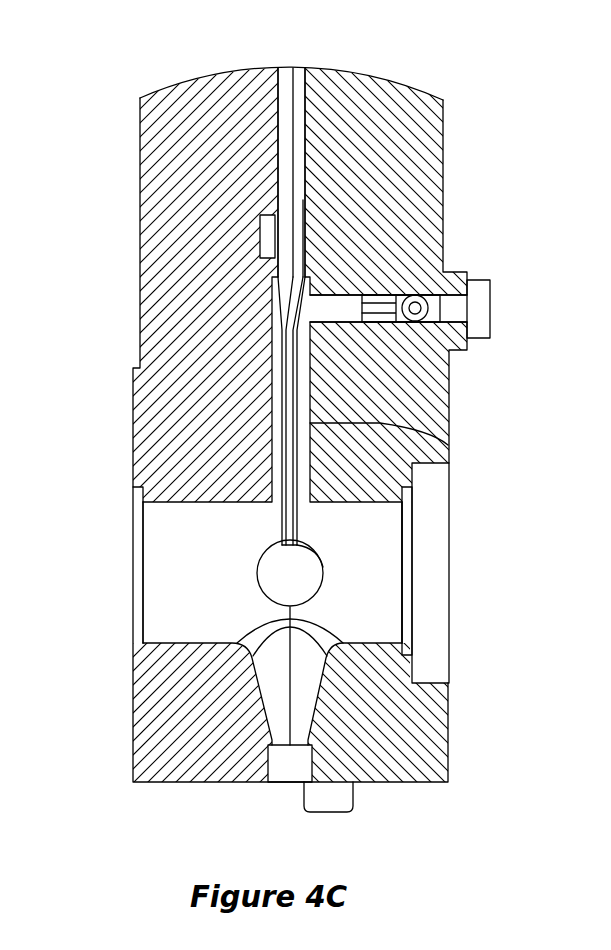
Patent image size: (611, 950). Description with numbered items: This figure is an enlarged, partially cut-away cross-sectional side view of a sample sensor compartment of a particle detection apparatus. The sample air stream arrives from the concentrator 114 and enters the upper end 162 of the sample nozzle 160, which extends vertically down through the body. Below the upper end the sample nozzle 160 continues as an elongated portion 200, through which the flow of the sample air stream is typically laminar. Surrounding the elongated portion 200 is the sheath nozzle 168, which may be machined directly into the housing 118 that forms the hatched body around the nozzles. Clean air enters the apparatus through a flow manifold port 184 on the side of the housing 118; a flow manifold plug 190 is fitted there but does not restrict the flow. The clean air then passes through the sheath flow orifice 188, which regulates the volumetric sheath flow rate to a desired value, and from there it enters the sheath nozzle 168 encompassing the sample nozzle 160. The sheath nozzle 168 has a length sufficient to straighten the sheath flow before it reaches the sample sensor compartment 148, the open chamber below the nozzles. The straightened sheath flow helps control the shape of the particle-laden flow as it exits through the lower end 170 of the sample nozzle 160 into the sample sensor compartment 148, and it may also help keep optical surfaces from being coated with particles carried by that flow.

The concentrator 114 is at (292, 152).
The housing 118 is at (170, 400).
The sample sensor compartment 148 is at (185, 577).
The sample nozzle 160 is at (273, 370).
The upper end of the sample nozzle 162 is at (308, 238).
The sheath nozzle 168 is at (440, 440).
The lower end of the sample nozzle 170 is at (323, 567).
The flow manifold port 184 is at (443, 304).
The sheath flow orifice 188 is at (448, 390).
The flow manifold plug 190 is at (490, 325).
The elongated portion of the sample nozzle 200 is at (283, 447).